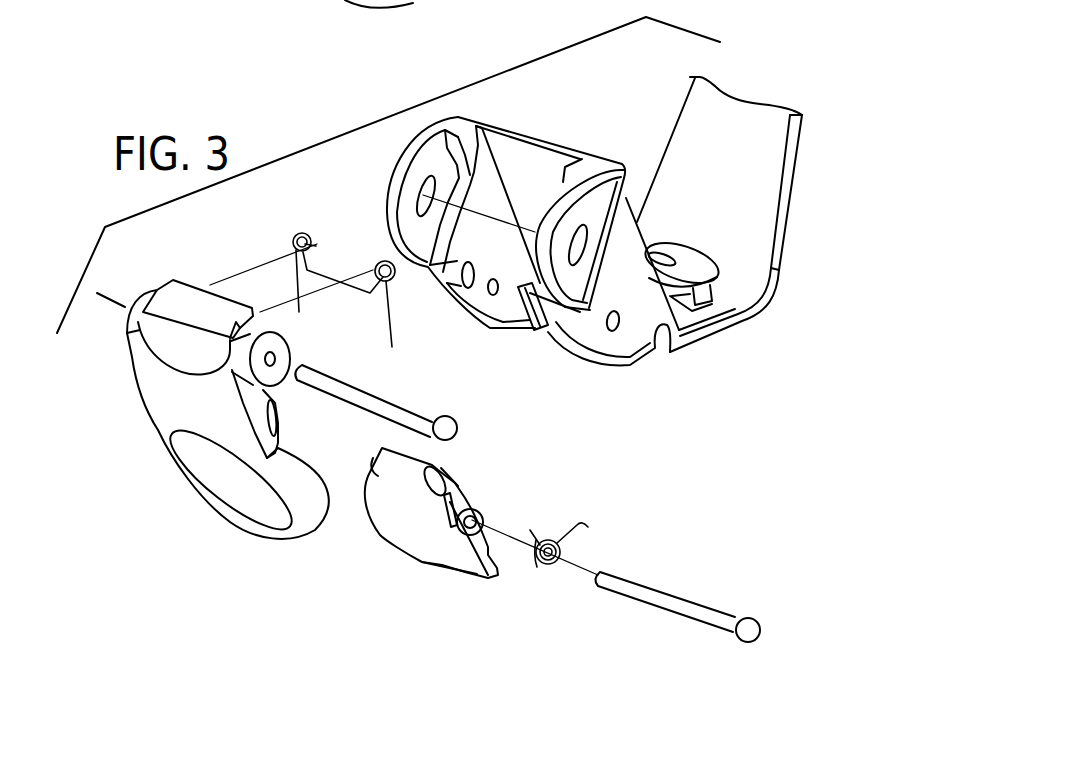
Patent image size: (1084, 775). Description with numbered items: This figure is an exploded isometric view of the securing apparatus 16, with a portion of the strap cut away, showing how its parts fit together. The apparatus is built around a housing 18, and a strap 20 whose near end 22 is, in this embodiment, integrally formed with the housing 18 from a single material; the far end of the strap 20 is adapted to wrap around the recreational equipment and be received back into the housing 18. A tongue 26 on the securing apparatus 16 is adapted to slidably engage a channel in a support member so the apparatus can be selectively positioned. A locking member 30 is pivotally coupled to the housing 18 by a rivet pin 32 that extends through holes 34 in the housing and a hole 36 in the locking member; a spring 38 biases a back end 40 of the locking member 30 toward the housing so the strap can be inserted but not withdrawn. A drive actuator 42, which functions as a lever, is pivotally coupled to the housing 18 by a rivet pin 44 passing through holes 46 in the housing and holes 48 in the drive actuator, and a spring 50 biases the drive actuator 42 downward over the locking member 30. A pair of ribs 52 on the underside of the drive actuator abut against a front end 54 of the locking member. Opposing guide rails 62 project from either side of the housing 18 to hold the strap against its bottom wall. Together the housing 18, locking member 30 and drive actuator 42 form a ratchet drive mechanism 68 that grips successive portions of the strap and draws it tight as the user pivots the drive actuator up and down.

The securing apparatus 16 is at (806, 202).
The housing 18 is at (565, 142).
The strap 20 is at (756, 108).
The near end 22 is at (755, 158).
The tongue 26 is at (690, 263).
The locking member 30 is at (402, 518).
The rivet pin 32 is at (696, 606).
The holes 34 is at (495, 292).
The hole 36 is at (472, 520).
The spring 38 is at (533, 570).
The back end 40 is at (450, 557).
The drive actuator 42 is at (148, 419).
The rivet pin 44 is at (412, 408).
The holes 46 is at (418, 208).
The holes 48 is at (274, 357).
The spring 50 is at (292, 233).
The ribs 52 is at (281, 412).
The front end 54 is at (395, 470).
The guide rails 62 is at (547, 333).
The ratchet drive mechanism 68 is at (728, 461).